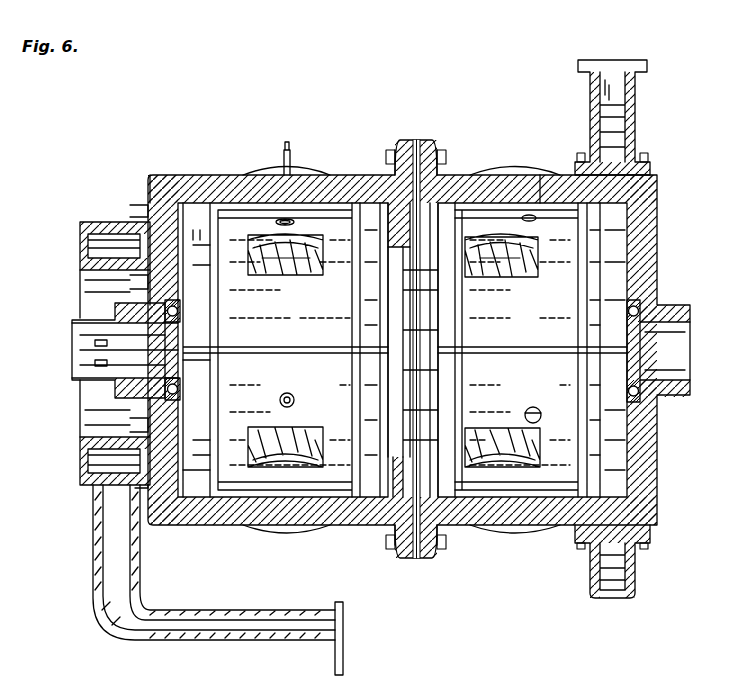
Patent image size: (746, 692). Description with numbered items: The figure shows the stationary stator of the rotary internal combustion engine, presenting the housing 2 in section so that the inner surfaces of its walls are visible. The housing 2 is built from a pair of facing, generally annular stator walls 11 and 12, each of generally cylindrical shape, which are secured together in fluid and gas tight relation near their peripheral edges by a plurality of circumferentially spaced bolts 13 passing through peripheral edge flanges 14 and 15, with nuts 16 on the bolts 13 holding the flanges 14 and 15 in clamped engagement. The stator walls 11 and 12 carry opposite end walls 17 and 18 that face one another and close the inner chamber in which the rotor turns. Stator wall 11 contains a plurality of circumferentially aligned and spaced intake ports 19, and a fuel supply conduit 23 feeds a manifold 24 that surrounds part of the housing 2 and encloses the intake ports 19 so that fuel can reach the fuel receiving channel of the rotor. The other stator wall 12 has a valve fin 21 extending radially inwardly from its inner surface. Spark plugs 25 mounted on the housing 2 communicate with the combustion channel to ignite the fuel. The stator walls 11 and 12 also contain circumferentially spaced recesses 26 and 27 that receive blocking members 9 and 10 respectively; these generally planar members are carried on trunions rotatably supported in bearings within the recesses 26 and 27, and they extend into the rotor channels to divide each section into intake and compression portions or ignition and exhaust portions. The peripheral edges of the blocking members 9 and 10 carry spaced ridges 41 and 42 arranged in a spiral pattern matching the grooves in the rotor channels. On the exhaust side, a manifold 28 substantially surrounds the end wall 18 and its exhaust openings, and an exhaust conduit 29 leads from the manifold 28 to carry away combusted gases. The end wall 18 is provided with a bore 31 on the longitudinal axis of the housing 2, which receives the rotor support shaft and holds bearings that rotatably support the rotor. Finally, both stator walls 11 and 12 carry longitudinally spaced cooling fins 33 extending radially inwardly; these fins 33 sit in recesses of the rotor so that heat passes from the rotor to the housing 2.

The housing 2 is at (658, 455).
The blocking member 9 is at (480, 270).
The blocking member 10 is at (268, 272).
The stator wall 11 is at (548, 176).
The stator wall 12 is at (200, 175).
The bolt 13 is at (395, 548).
The peripheral edge flange 14 is at (437, 142).
The peripheral edge flange 15 is at (395, 140).
The nut 16 is at (437, 548).
The end wall 17 is at (659, 258).
The end wall 18 is at (182, 278).
The intake port 19 is at (522, 218).
The valve fin 21 is at (392, 392).
The fuel supply conduit 23 is at (640, 96).
The manifold 24 is at (638, 566).
The spark plug 25 is at (284, 150).
The recess 26 is at (538, 434).
The recess 27 is at (248, 440).
The manifold 28 is at (84, 378).
The exhaust conduit 29 is at (178, 610).
The bore 31 is at (100, 328).
The cooling fin 33 is at (352, 310).
The ridge 41 is at (510, 276).
The ridge 42 is at (290, 274).